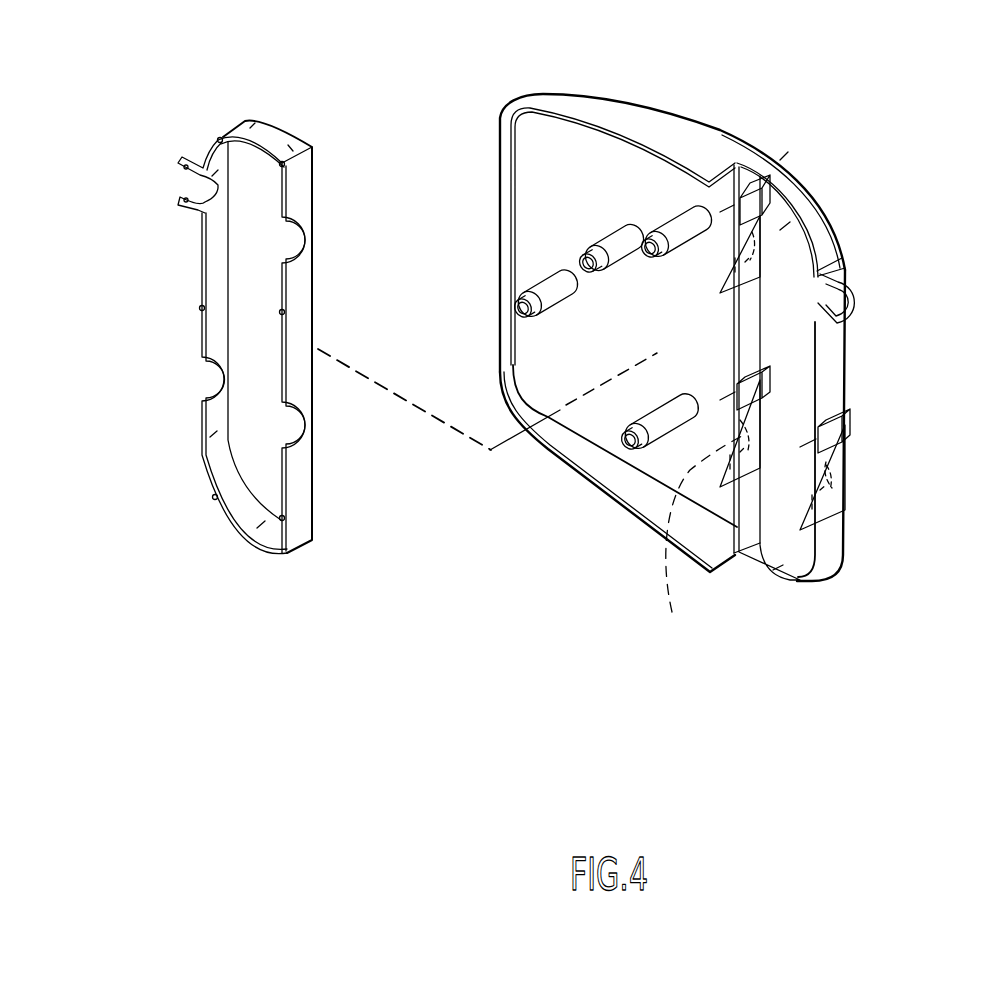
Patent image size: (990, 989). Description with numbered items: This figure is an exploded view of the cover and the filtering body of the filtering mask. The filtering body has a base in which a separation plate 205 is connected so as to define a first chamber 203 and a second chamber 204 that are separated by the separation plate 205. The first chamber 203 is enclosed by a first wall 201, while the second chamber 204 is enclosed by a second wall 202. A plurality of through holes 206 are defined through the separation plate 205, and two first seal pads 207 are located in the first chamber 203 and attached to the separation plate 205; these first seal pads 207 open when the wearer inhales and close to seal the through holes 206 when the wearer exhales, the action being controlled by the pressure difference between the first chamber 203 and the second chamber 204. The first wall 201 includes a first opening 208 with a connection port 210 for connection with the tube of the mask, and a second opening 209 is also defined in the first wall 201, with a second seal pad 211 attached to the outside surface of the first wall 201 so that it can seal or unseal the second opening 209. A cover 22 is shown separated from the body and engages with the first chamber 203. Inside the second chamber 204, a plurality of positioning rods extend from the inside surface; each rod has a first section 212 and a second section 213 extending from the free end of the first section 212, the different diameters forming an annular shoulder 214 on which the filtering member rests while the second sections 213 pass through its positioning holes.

The cover 22 is at (288, 163).
The first wall 201 is at (832, 242).
The second wall 202 is at (617, 118).
The first chamber 203 is at (789, 229).
The second chamber 204 is at (553, 135).
The separation plate 205 is at (749, 520).
The through holes 206 is at (700, 540).
The first seal pads 207 is at (730, 222).
The first opening 208 is at (827, 271).
The second opening 209 is at (828, 465).
The connection port 210 is at (857, 305).
The second seal pad 211 is at (832, 500).
The first section 212 is at (685, 228).
The second section 213 is at (522, 305).
The annular shoulder 214 is at (643, 452).